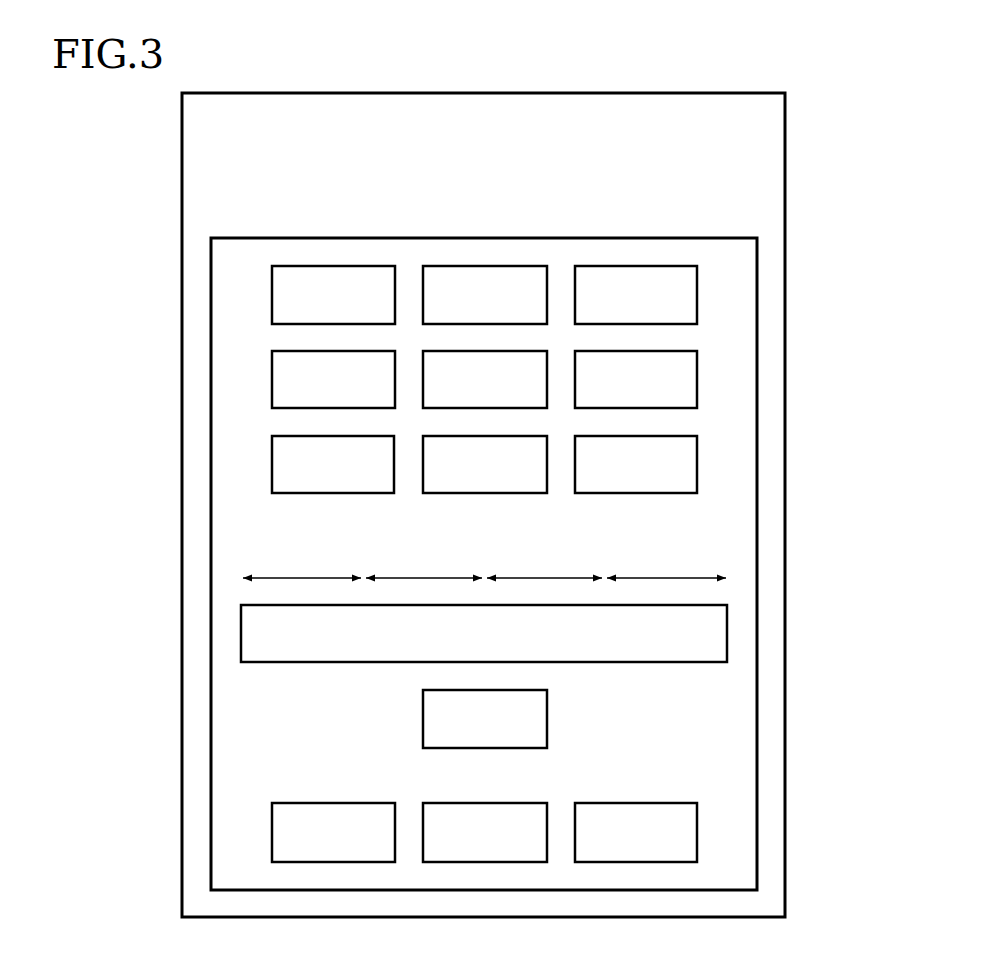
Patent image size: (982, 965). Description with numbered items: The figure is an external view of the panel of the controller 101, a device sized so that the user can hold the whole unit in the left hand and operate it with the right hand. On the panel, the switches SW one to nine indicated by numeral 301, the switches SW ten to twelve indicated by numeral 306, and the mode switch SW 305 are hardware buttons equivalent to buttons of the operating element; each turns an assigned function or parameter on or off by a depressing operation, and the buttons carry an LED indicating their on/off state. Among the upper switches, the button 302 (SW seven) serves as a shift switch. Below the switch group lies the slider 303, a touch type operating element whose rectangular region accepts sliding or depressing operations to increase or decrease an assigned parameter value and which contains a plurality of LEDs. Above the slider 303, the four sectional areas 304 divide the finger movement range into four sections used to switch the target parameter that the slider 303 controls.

The controller 101 is at (670, 93).
The switches SW 1 to 9 301 is at (712, 340).
The button SW 7 (shift switch) 302 is at (272, 458).
The slider 303 is at (727, 632).
The four sectional areas 304 is at (695, 530).
The mode switch SW 305 is at (547, 718).
The switches SW 10 to 12 306 is at (717, 833).